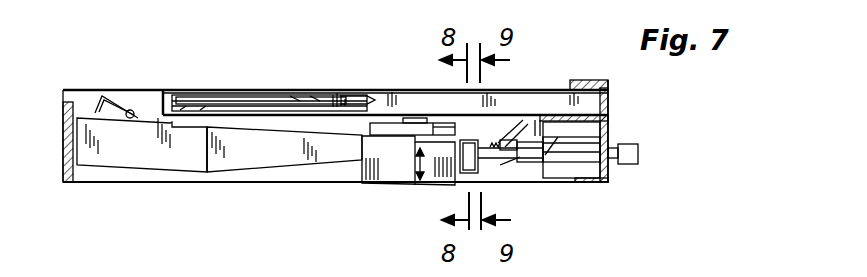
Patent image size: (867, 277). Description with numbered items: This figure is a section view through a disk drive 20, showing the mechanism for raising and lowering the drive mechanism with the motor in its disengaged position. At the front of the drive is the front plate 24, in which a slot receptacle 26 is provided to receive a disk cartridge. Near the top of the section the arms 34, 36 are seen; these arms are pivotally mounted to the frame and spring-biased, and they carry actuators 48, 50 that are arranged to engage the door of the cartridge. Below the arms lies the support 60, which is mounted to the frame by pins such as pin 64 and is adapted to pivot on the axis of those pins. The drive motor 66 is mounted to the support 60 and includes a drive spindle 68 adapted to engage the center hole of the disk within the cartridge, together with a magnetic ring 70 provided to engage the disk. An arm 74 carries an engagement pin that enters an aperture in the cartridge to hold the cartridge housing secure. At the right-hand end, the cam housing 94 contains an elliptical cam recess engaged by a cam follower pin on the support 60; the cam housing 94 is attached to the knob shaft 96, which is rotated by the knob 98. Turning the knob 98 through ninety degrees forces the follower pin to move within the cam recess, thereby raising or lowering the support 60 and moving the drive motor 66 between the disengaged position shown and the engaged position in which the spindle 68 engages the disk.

The disk drive 20 is at (662, 106).
The front plate 24 is at (579, 80).
The slot receptacle 26 is at (606, 100).
The arm 34 is at (233, 108).
The arm 36 is at (222, 100).
The actuator 48 is at (367, 95).
The actuator 50 is at (293, 92).
The support 60 is at (212, 170).
The pin 64 is at (129, 110).
The drive motor 66 is at (380, 172).
The drive spindle 68 is at (408, 120).
The magnetic ring 70 is at (433, 128).
The arm 74 is at (534, 152).
The cam housing 94 is at (468, 174).
The knob shaft 96 is at (588, 157).
The knob 98 is at (640, 152).